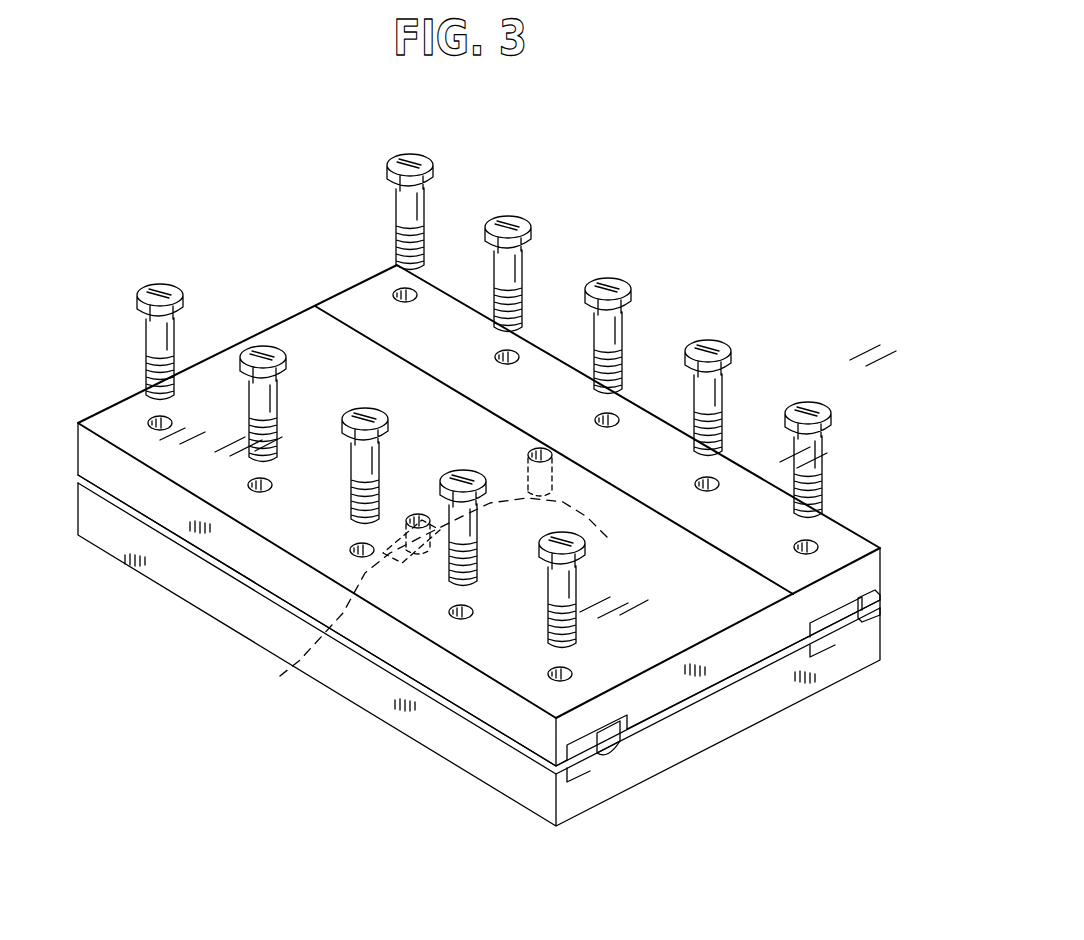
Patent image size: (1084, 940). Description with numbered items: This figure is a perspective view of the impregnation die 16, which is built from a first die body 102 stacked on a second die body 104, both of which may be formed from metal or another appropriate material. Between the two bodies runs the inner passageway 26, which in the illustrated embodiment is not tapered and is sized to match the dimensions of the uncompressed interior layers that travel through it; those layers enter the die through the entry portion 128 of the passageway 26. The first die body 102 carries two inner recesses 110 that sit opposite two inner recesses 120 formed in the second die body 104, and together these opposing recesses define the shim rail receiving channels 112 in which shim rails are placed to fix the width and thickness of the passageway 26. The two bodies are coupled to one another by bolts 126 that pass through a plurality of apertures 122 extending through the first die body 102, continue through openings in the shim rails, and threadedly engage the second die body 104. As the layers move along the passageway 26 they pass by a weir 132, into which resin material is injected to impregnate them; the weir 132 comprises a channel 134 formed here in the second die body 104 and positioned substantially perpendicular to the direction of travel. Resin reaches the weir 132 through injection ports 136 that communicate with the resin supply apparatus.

The impregnation die 16 is at (668, 242).
The passageway 26 is at (730, 702).
The first die body 102 is at (835, 557).
The second die body 104 is at (480, 762).
The inner recesses 110 is at (570, 763).
The shim rail receiving channels 112 is at (584, 776).
The inner recesses 120 is at (596, 768).
The apertures 122 is at (400, 292).
The bolts 126 is at (264, 348).
The entry portion 128 is at (748, 680).
The weir 132 is at (280, 676).
The channel 134 is at (606, 536).
The injection ports 136 is at (417, 512).